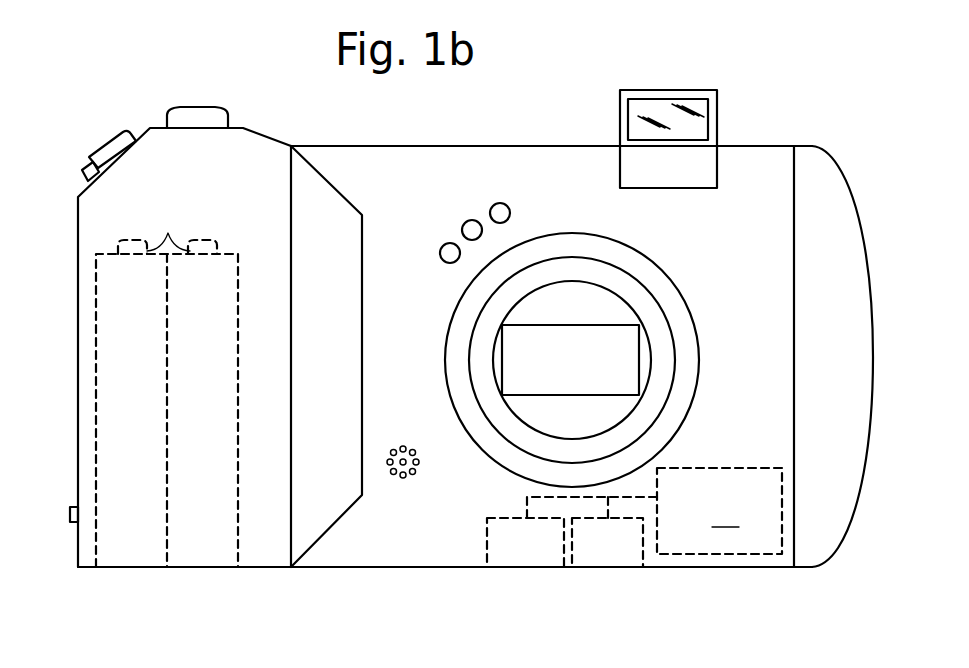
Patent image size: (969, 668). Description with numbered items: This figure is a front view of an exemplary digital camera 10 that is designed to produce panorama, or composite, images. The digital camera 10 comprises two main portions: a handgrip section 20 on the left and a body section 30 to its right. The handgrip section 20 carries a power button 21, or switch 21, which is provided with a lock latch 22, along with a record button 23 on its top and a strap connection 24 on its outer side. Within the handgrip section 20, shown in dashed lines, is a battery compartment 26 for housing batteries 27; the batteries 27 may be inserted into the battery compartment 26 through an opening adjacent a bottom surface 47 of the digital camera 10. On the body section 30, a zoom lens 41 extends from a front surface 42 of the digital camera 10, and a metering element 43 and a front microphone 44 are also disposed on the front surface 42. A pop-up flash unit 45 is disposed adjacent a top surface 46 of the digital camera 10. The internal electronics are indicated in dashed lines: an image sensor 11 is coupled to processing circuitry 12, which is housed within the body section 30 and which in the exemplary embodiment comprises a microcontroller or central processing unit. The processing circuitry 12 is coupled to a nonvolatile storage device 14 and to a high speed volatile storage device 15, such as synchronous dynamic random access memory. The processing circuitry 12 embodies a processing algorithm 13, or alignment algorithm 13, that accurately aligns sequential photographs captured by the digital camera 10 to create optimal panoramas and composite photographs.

The digital camera 10 is at (100, 94).
The image sensor 11 is at (612, 323).
The processing circuitry 12 is at (757, 467).
The processing algorithm 13 is at (725, 515).
The nonvolatile storage device 14 is at (607, 562).
The high speed storage device 15 is at (497, 562).
The handgrip section 20 is at (260, 568).
The power button 21 is at (91, 152).
The lock latch 22 is at (82, 176).
The record button 23 is at (230, 118).
The strap connection 24 is at (70, 510).
The battery compartment 26 is at (97, 548).
The batteries 27 is at (168, 233).
The body section 30 is at (360, 569).
The zoom lens 41 is at (647, 255).
The front surface 42 is at (488, 157).
The metering element 43 is at (502, 202).
The front microphone 44 is at (420, 462).
The pop-up flash unit 45 is at (620, 122).
The top surface 46 is at (765, 145).
The bottom surface 47 is at (765, 569).